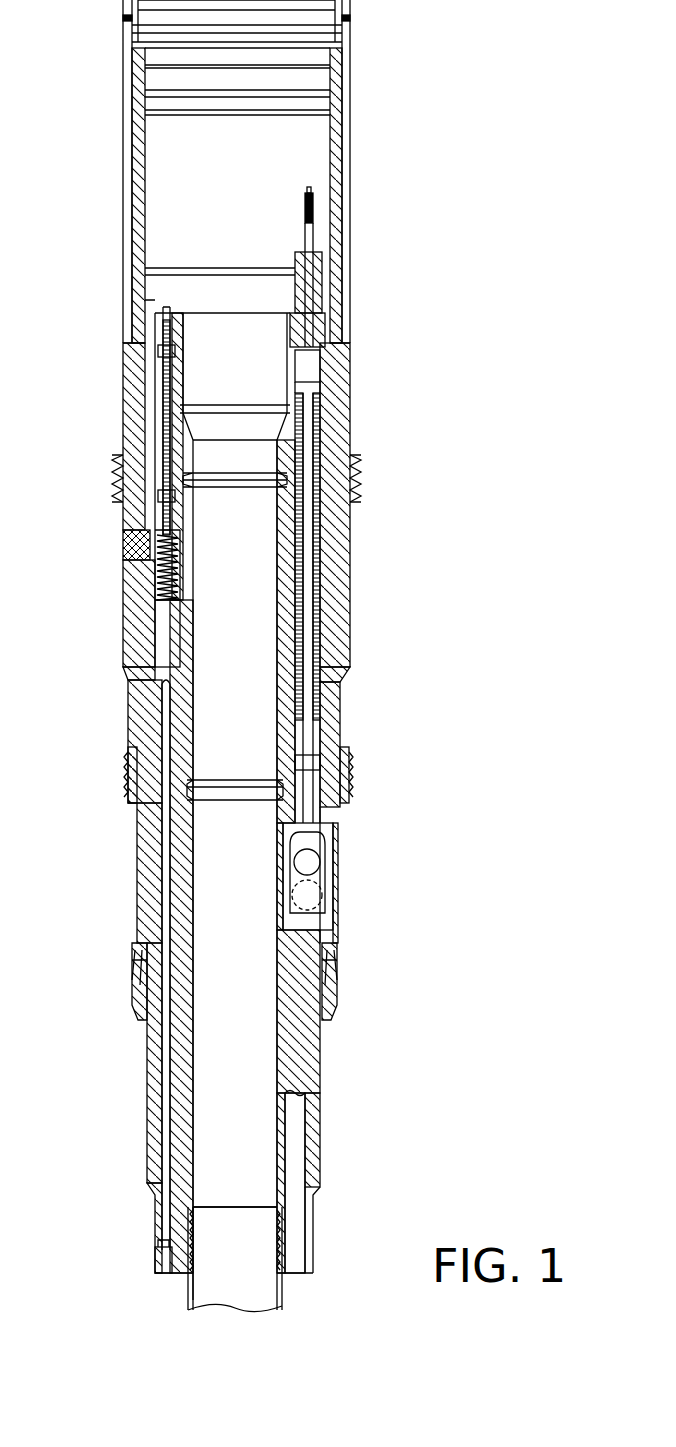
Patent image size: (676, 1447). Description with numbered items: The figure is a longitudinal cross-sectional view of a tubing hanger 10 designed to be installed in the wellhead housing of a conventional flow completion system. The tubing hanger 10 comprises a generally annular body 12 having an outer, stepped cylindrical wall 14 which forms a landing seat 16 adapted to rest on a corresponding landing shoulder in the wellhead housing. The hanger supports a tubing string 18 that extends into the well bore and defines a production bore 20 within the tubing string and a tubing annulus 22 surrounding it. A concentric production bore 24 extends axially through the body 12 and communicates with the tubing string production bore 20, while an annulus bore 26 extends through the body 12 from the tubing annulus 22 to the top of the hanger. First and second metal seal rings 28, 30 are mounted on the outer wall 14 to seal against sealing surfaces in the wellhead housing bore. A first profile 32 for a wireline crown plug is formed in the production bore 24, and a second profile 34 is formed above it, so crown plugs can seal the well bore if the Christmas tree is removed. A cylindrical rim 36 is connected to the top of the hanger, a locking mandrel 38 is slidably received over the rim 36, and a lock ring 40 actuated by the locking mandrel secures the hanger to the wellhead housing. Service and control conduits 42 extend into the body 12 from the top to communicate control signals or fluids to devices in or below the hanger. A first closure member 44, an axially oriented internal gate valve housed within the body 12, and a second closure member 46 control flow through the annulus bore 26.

The tubing hanger 10 is at (425, 532).
The body 12 is at (150, 592).
The outer wall 14 is at (122, 660).
The landing seat 16 is at (123, 672).
The tubing string 18 is at (280, 1290).
The production bore 20 is at (246, 1275).
The tubing annulus 22 is at (179, 1303).
The production bore 24 is at (246, 1036).
The annulus bore 26 is at (150, 642).
The first seal ring 28 is at (135, 947).
The second seal ring 30 is at (128, 776).
The first profile 32 is at (272, 798).
The second profile 34 is at (278, 487).
The cylindrical rim 36 is at (146, 148).
The locking mandrel 38 is at (133, 140).
The lock ring 40 is at (120, 475).
The service and control conduit 42 is at (156, 1080).
The first closure member 44 is at (342, 872).
The second closure member 46 is at (140, 545).